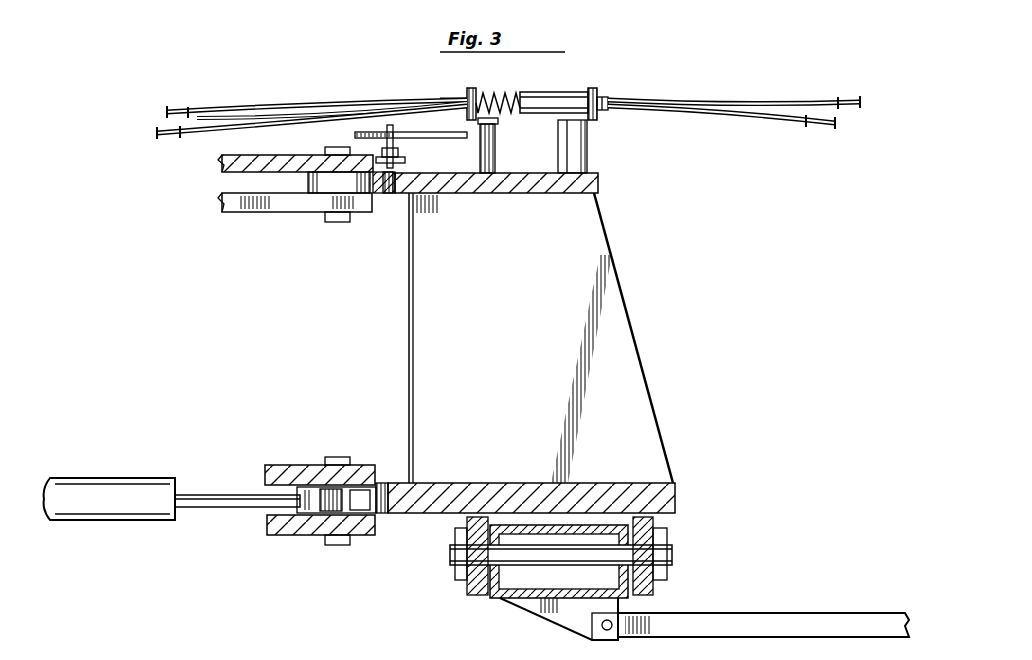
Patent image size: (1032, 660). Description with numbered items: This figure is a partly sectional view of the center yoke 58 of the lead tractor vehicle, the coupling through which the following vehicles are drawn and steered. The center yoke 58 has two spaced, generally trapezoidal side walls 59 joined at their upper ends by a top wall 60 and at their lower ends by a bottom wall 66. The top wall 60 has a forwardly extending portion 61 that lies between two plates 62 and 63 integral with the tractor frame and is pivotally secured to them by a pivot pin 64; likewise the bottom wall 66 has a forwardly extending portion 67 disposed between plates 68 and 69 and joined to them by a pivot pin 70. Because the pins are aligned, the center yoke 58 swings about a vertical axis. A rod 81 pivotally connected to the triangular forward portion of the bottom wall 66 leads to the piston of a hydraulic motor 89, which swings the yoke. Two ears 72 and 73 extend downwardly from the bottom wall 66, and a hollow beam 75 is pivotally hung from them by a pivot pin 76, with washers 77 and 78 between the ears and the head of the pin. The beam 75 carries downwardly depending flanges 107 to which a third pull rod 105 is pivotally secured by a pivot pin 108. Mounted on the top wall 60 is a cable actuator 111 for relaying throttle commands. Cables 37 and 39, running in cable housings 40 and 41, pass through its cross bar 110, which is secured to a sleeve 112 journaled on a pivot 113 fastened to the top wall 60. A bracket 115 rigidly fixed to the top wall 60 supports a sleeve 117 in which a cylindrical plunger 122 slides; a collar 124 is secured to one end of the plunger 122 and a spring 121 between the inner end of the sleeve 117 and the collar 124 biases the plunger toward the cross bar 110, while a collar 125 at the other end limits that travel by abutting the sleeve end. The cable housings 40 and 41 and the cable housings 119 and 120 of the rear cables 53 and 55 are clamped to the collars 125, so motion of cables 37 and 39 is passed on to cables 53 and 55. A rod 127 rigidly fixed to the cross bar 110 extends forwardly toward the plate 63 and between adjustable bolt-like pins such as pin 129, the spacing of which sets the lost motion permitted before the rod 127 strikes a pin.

The cable 37 is at (183, 108).
The cable 39 is at (162, 135).
The cable housing 40 is at (400, 104).
The cable housing 41 is at (207, 128).
The cable 53 is at (822, 127).
The cable 55 is at (858, 100).
The center yoke 58 is at (624, 271).
The side walls 59 is at (526, 318).
The top wall 60 is at (560, 176).
The forwardly extending portion 61 is at (388, 215).
The plate 62 is at (243, 212).
The plate 63 is at (247, 155).
The pivot pin 64 is at (335, 222).
The bottom wall 66 is at (650, 482).
The forwardly extending portion 67 is at (383, 513).
The plate 68 is at (280, 465).
The plate 69 is at (295, 536).
The pivot pin 70 is at (340, 456).
The ear 72 is at (655, 518).
The ear 73 is at (468, 518).
The hollow beam 75 is at (495, 598).
The pivot pin 76 is at (672, 553).
The washer 77 is at (667, 575).
The washer 78 is at (460, 580).
The rod 81 is at (200, 508).
The hydraulic motor 89 is at (122, 476).
The third pull rod 105 is at (800, 612).
The flange 107 is at (548, 618).
The pivot pin 108 is at (615, 638).
The cross bar 110 is at (441, 115).
The cable actuator 111 is at (607, 52).
The sleeve 112 is at (497, 135).
The pivot 113 is at (485, 119).
The bracket 115 is at (590, 132).
The sleeve 117 is at (594, 88).
The cable housing 119 is at (812, 103).
The cable housing 120 is at (790, 118).
The spring 121 is at (484, 92).
The cylindrical plunger 122 is at (547, 92).
The collar 124 is at (468, 92).
The collar 125 is at (600, 95).
The rod 127 is at (405, 142).
The pin 129 is at (387, 125).